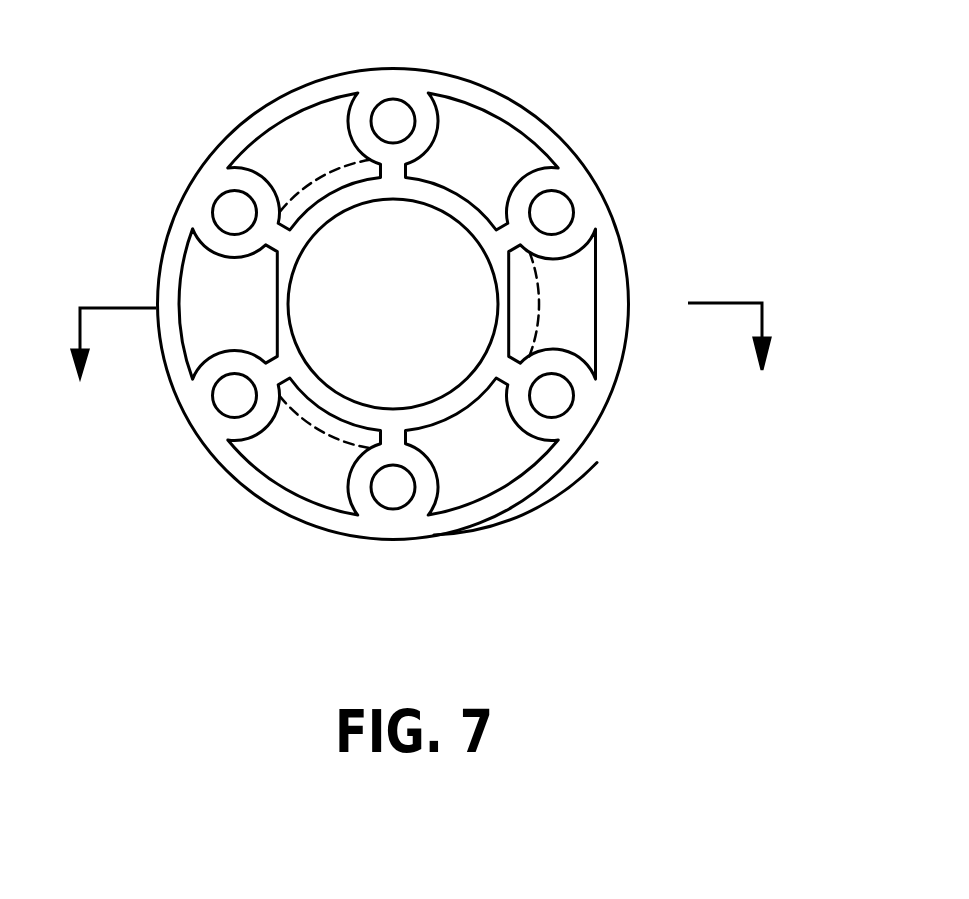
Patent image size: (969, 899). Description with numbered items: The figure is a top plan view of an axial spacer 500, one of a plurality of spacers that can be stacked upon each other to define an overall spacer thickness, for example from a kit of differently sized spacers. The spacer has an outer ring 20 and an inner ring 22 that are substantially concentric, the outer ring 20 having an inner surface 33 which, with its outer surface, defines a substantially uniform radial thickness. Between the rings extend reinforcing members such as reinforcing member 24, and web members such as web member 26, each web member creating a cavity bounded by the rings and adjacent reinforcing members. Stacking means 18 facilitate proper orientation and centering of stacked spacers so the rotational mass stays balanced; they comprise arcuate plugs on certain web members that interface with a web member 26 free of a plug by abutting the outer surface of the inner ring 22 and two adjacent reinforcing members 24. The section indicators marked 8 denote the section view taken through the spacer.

The axial spacer 500 is at (461, 307).
The outer ring 20 is at (488, 83).
The inner ring 22 is at (502, 305).
The stacking means 18 is at (560, 331).
The reinforcing member 24 is at (537, 423).
The web member 26 is at (297, 480).
The inner surface 33 is at (546, 467).
The section line 8- 8 is at (422, 366).